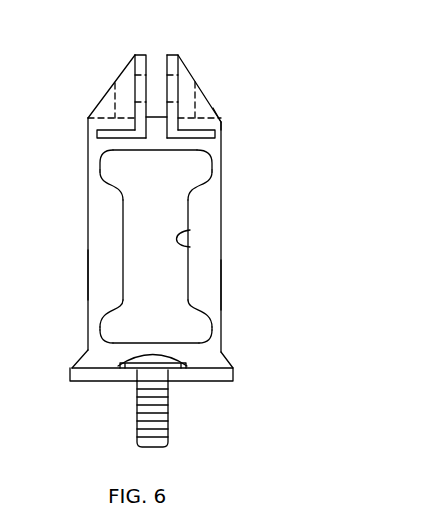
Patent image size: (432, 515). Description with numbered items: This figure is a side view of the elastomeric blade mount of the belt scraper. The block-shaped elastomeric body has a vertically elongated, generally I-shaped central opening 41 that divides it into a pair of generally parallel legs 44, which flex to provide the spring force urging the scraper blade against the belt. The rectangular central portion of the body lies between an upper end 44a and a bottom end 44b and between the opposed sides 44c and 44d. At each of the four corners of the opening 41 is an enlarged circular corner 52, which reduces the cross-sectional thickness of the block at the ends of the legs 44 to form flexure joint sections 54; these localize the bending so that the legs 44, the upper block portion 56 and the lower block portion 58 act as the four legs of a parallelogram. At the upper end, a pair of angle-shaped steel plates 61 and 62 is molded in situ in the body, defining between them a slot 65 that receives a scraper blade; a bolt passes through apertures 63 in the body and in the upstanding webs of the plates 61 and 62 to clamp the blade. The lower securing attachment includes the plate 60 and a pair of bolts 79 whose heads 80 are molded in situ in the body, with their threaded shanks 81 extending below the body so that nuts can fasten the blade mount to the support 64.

The central opening 41 is at (165, 207).
The legs 44 is at (89, 212).
The upper end 44a is at (222, 120).
The bottom end 44b is at (212, 360).
The side 44c is at (221, 287).
The side 44d is at (88, 275).
The enlarged circular corner 52 is at (208, 160).
The flexure joint section 54 is at (96, 163).
The upper block portion 56 is at (90, 122).
The lower block portion 58 is at (107, 356).
The plate 60 is at (200, 377).
The angle-shaped plate 61 is at (94, 129).
The angle-shaped plate 62 is at (222, 133).
The apertures 63 is at (116, 88).
The support 64 is at (190, 247).
The slot 65 is at (158, 65).
The bolt 79 is at (170, 410).
The bolt head 80 is at (157, 352).
The threaded shank 81 is at (137, 427).